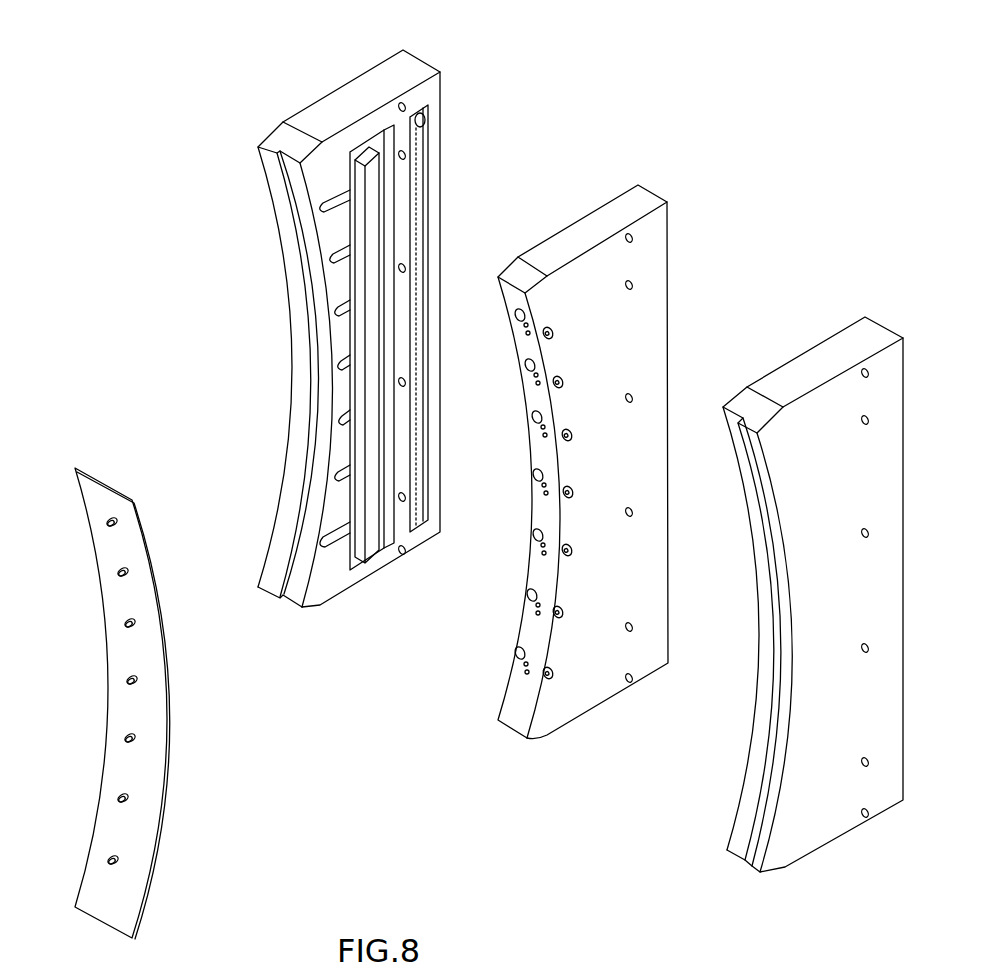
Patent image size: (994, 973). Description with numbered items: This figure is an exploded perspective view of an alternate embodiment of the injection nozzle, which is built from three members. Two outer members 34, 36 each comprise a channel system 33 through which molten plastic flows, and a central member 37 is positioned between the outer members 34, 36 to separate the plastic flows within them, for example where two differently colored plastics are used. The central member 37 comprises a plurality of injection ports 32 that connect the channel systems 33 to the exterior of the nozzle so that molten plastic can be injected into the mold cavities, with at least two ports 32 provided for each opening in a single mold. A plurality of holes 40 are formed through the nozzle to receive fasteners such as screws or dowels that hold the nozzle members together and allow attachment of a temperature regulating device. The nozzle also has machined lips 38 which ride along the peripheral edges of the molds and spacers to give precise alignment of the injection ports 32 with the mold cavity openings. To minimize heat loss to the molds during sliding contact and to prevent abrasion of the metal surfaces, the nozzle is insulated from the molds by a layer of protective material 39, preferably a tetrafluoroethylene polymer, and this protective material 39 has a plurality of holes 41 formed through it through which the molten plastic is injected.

The injection ports 32 is at (562, 383).
The channel system 33 is at (413, 185).
The outer member 34 is at (337, 112).
The outer member 36 is at (828, 360).
The central member 37 is at (603, 225).
The machined lips 38 is at (296, 264).
The protective material 39 is at (97, 493).
The holes 40 is at (406, 153).
The holes 41 is at (108, 525).